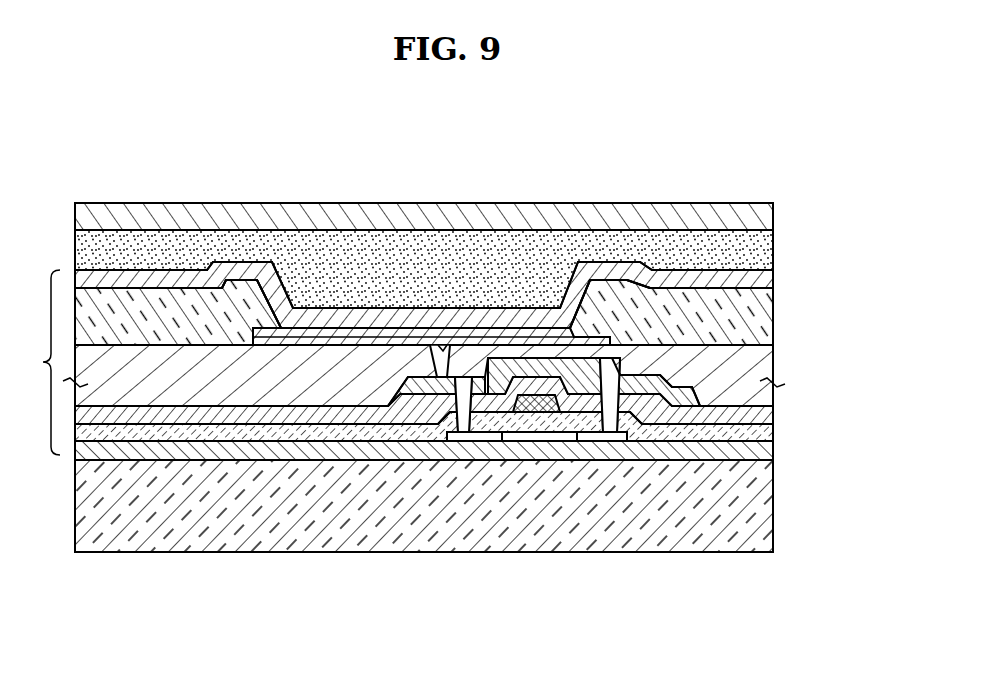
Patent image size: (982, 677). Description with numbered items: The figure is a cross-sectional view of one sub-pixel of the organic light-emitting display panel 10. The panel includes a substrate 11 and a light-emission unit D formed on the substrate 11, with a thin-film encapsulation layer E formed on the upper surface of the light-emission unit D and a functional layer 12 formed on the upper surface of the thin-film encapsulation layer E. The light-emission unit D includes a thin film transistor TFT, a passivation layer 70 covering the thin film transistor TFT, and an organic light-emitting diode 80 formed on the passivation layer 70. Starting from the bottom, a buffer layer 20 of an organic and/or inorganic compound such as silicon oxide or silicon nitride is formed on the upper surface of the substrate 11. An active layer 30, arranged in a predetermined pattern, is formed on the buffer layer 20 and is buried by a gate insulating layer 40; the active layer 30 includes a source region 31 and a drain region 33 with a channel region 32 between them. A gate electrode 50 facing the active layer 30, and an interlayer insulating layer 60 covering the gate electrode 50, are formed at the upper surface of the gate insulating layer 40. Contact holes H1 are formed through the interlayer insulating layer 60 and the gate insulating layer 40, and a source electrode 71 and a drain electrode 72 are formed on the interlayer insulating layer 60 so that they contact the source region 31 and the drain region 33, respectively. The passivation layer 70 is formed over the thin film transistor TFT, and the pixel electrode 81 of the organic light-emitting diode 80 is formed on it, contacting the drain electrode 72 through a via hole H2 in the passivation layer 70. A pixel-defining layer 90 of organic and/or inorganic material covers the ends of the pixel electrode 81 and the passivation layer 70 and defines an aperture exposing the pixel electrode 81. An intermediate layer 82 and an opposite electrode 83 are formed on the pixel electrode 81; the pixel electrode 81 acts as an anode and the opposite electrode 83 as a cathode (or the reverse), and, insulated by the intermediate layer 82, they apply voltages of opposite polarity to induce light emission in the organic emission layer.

The organic light-emitting display panel 10 is at (133, 139).
The substrate 11 is at (775, 520).
The functional layer 12 is at (775, 212).
The thin-film encapsulation layer E is at (775, 247).
The buffer layer 20 is at (775, 455).
The active layer 30 is at (630, 618).
The source region 31 is at (600, 445).
The channel region 32 is at (540, 445).
The drain region 33 is at (476, 445).
The gate insulating layer 40 is at (775, 430).
The gate electrode 50 is at (537, 395).
The interlayer insulating layer 60 is at (775, 405).
The passivation layer 70 is at (775, 376).
The source electrode 71 is at (572, 358).
The drain electrode 72 is at (483, 352).
The organic light-emitting diode 80 is at (424, 238).
The pixel electrode 81 is at (309, 316).
The intermediate layer 82 is at (372, 328).
The opposite electrode 83 is at (431, 338).
The pixel-defining layer 90 is at (775, 308).
The contact holes H1 is at (612, 362).
The via hole H2 is at (455, 352).
The thin film transistor TFT is at (668, 356).
The light-emission unit D is at (41, 362).